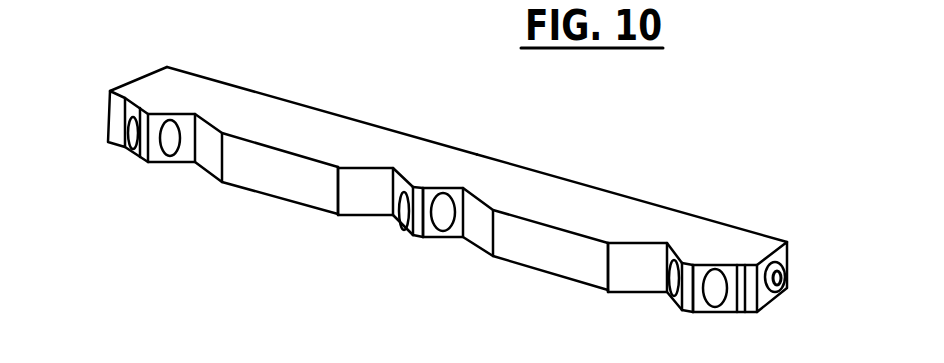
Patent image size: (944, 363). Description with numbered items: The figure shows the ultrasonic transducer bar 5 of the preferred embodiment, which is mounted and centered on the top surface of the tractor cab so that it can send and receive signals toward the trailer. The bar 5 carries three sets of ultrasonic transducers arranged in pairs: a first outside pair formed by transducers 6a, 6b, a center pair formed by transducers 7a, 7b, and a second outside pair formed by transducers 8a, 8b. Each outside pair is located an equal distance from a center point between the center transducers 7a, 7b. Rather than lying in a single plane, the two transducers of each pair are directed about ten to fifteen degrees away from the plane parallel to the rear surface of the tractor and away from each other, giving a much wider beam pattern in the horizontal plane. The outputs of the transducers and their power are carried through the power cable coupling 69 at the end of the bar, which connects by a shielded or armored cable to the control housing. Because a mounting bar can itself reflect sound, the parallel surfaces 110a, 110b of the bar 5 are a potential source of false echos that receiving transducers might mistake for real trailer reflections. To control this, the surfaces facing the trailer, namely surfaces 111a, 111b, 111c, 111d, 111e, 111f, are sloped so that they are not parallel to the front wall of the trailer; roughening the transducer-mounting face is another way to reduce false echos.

The transducer bar 5 is at (443, 162).
The parallel surface 110a is at (280, 158).
The parallel surface 110b is at (562, 245).
The sloped surface 111a is at (125, 97).
The sloped surface 111b is at (213, 162).
The sloped surface 111c is at (352, 203).
The sloped surface 111d is at (483, 237).
The sloped surface 111e is at (623, 280).
The sloped surface 111f is at (738, 315).
The ultrasonic transducer 6a is at (137, 146).
The ultrasonic transducer 6b is at (174, 153).
The ultrasonic transducer 7a is at (407, 225).
The ultrasonic transducer 7b is at (437, 223).
The ultrasonic transducer 8a is at (674, 300).
The ultrasonic transducer 8b is at (716, 303).
The power cable coupling 69 is at (785, 290).